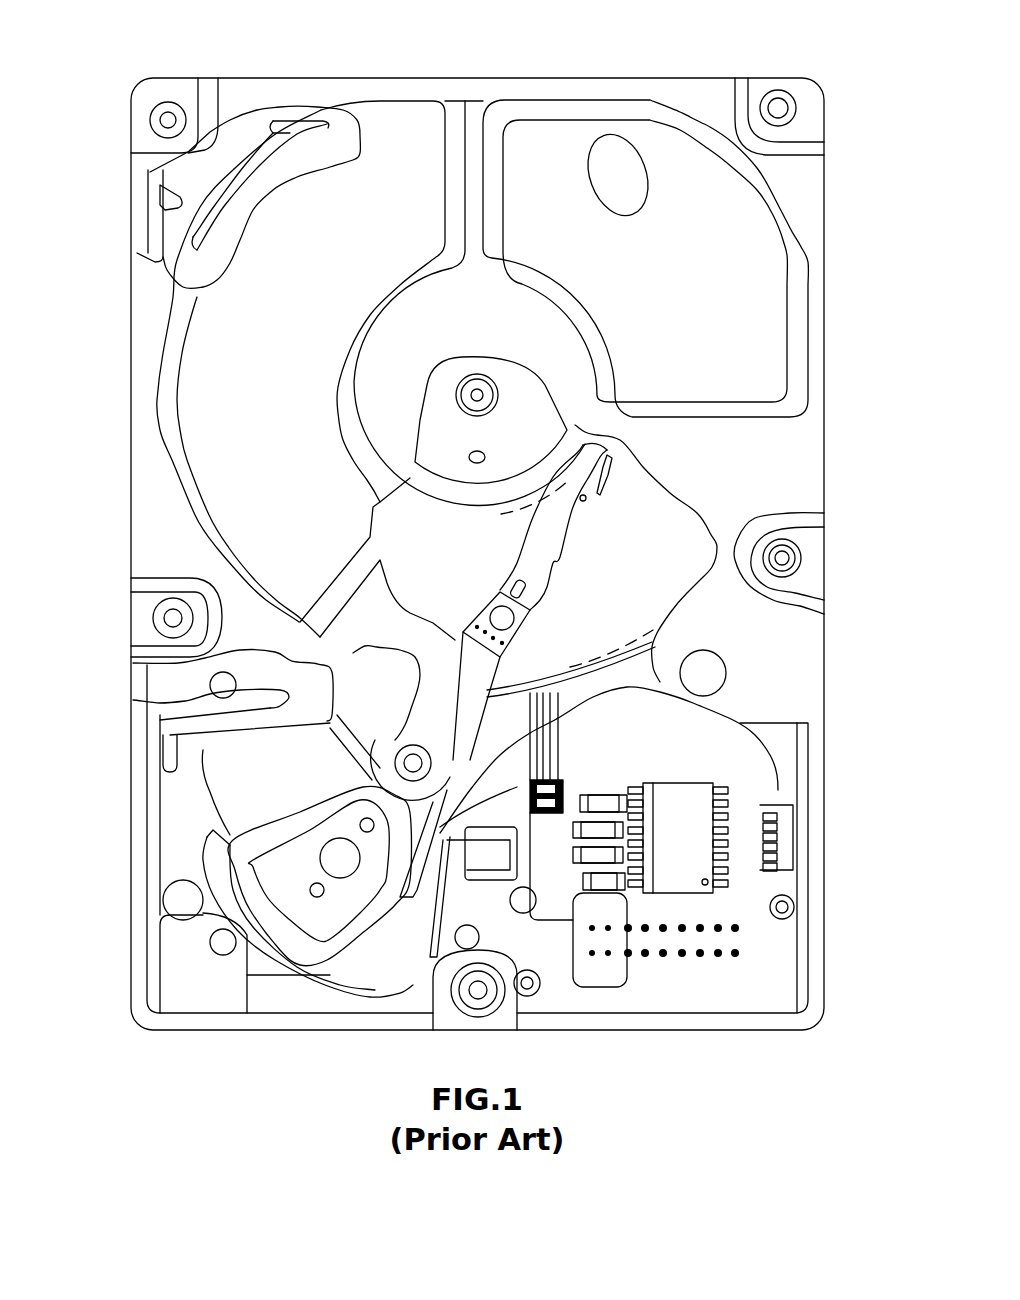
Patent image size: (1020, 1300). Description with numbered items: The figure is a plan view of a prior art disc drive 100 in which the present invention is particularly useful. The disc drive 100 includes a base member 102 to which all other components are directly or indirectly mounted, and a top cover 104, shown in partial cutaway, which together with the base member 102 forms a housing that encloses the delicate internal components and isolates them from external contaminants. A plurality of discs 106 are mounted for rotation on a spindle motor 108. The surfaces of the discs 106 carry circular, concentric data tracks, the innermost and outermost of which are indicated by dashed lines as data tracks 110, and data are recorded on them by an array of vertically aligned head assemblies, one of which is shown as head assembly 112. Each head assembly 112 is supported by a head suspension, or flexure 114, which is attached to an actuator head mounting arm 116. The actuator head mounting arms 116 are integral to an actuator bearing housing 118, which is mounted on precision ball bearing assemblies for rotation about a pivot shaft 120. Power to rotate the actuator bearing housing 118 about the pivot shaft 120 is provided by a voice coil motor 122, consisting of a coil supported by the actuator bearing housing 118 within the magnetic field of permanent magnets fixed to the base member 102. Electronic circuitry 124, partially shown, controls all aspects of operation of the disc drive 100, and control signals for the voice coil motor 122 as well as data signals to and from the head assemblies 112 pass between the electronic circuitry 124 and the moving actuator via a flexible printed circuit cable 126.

The disc drive 100 is at (120, 522).
The base member 102 is at (133, 950).
The top cover 104 is at (473, 95).
The discs 106 is at (667, 594).
The spindle motor 108 is at (520, 384).
The data tracks 110 is at (513, 507).
The head assembly 112 is at (612, 459).
The head suspension 114 is at (553, 557).
The actuator head mounting arm 116 is at (482, 670).
The actuator bearing housing 118 is at (385, 680).
The pivot shaft 120 is at (418, 757).
The voice coil motor 122 is at (295, 953).
The electronic circuitry 124 is at (738, 816).
The flexible printed circuit cable 126 is at (740, 733).